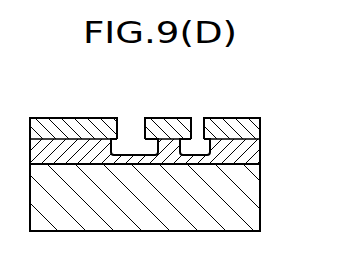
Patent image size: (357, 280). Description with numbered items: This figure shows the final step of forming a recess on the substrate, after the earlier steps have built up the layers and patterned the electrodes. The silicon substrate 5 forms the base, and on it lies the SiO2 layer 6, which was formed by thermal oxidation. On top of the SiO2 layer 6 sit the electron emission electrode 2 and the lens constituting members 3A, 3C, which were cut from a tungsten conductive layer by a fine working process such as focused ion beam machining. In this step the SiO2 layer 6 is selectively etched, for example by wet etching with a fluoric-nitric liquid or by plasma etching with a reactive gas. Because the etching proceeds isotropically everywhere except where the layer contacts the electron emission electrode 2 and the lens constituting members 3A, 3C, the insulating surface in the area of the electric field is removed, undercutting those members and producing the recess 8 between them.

The electron emission electrode 2 is at (73, 128).
The recess 8 is at (132, 144).
The lens constituting member 3A is at (170, 132).
The lens constituting member 3C is at (229, 132).
The SiO2 layer 6 is at (243, 153).
The silicon substrate 5 is at (248, 201).